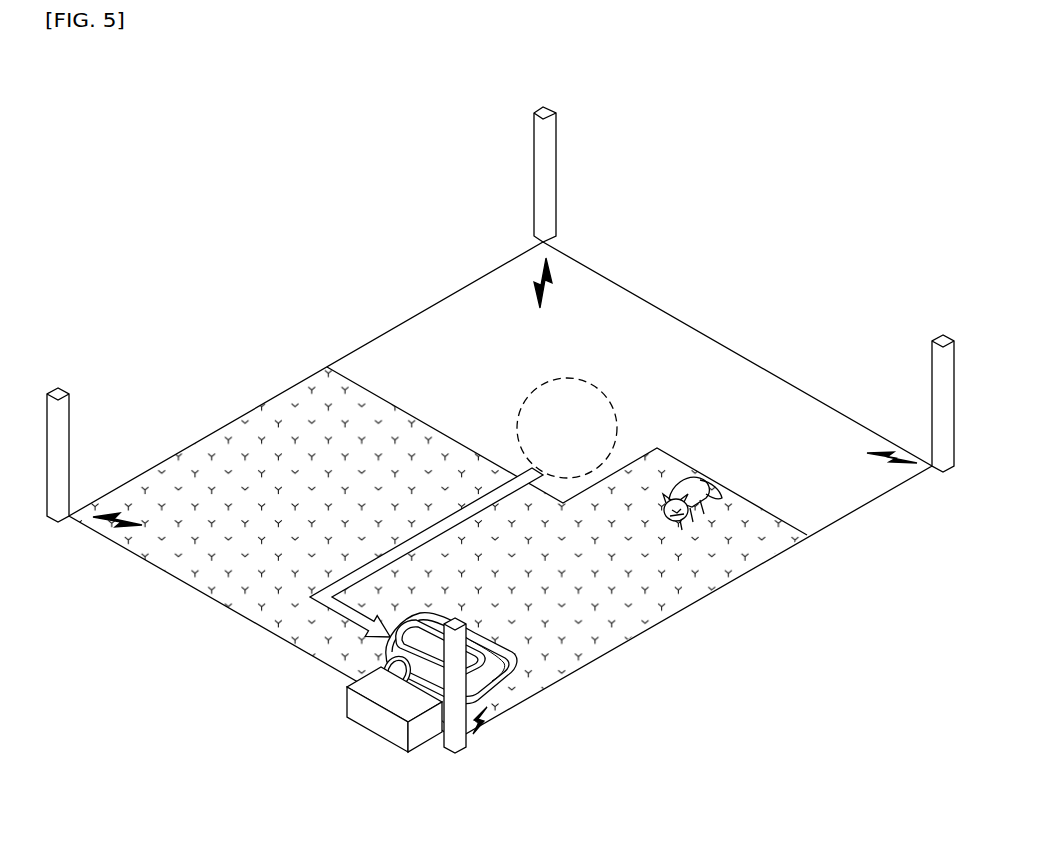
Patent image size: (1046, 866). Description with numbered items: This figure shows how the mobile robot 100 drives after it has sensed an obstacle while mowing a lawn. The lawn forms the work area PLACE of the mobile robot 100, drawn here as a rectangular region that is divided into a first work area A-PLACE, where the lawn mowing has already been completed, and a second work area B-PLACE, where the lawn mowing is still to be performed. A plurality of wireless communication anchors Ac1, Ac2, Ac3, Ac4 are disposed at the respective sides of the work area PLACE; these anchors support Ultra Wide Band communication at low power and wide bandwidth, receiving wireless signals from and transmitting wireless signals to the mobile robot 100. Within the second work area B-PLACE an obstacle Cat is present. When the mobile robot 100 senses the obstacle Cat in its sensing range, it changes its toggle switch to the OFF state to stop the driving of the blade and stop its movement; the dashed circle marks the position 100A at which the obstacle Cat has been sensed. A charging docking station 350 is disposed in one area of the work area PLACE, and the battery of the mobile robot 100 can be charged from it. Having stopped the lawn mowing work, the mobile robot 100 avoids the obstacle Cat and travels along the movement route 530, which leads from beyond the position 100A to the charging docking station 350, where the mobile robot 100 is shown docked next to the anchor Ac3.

The wireless communication anchor Ac1 is at (550, 106).
The wireless communication anchor Ac2 is at (932, 338).
The wireless communication anchor Ac3 is at (467, 738).
The wireless communication anchor Ac4 is at (62, 392).
The mobile robot 100 is at (498, 695).
The position where the obstacle has been sensed 100A is at (527, 396).
The charging docking station 350 is at (390, 732).
The movement route 530 is at (455, 530).
The obstacle Cat is at (667, 508).
The work area PLACE is at (500, 490).
The first work area A-PLACE is at (668, 372).
The second work area B-PLACE is at (662, 582).